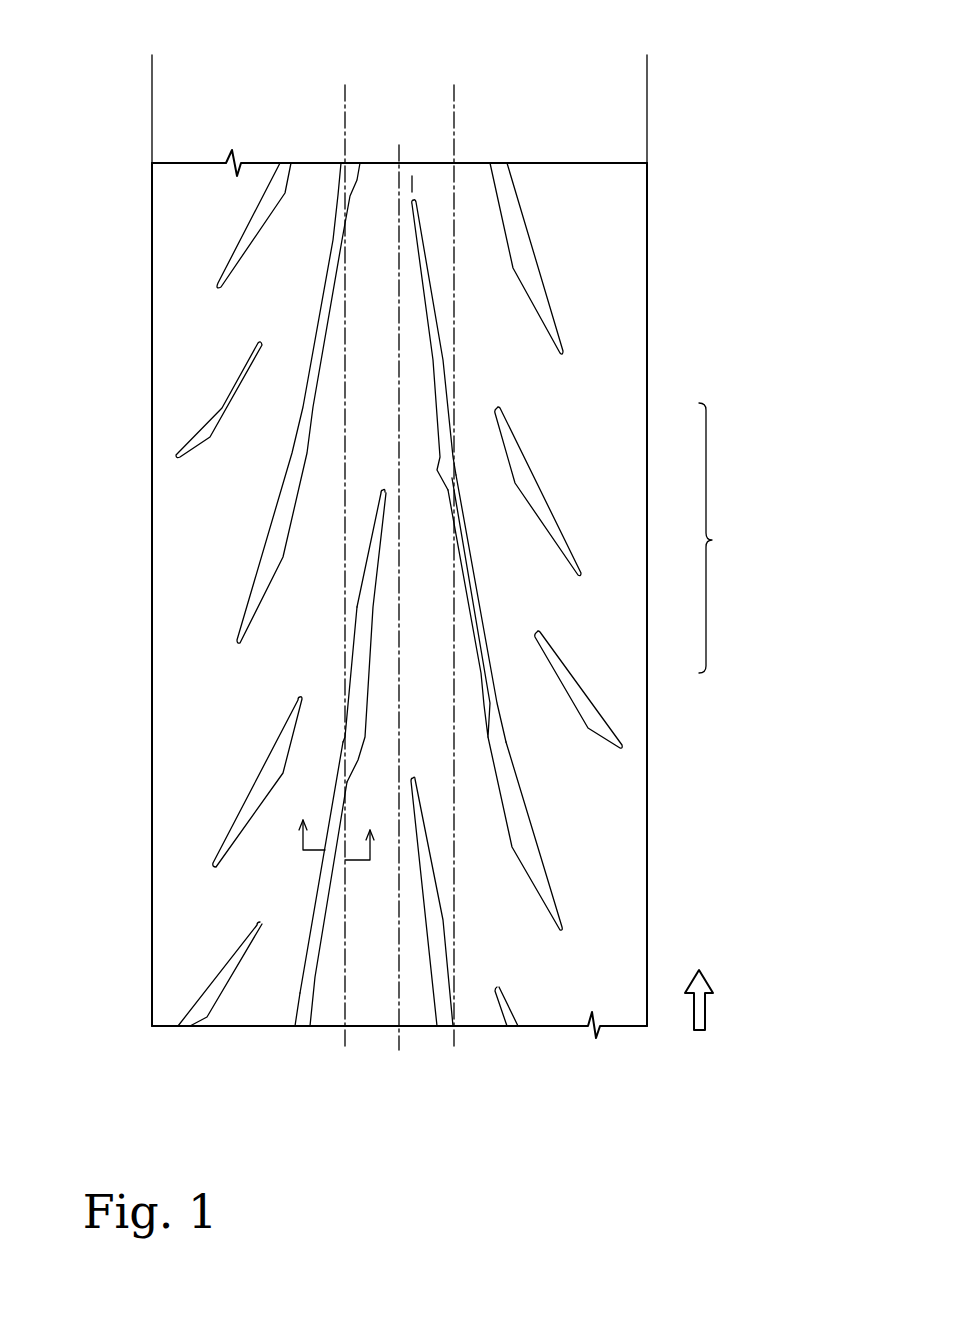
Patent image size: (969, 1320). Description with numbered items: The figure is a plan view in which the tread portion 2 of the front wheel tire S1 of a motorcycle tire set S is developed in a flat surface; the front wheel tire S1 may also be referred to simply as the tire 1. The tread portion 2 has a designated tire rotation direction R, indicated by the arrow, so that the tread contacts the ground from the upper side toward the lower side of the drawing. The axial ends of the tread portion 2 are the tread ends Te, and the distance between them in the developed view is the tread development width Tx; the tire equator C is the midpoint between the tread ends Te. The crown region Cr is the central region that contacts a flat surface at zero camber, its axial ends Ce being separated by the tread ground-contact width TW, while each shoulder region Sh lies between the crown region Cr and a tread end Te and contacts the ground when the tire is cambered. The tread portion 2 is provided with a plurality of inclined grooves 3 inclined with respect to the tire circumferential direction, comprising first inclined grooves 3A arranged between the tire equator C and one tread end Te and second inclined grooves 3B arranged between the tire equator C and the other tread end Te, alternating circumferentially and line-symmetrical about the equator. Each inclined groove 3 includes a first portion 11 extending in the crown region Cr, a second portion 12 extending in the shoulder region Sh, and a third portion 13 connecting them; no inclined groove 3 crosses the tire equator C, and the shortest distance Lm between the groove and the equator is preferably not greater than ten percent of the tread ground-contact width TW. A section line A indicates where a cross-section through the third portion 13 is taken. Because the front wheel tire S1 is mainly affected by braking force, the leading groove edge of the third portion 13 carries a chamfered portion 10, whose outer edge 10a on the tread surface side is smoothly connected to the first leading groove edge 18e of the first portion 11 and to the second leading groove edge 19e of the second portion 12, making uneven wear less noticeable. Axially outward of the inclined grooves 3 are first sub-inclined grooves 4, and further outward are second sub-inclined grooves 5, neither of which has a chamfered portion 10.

The tire 1 is at (400, 595).
The tread portion 2 is at (583, 160).
The inclined groove 3 is at (283, 527).
The first inclined groove 3A is at (463, 918).
The second inclined groove 3B is at (277, 790).
The first sub-inclined groove 4 is at (277, 760).
The second sub-inclined groove 5 is at (218, 410).
The chamfered portion 10 is at (277, 790).
The outer edge 10a is at (211, 917).
The first portion 11 is at (440, 388).
The second portion 12 is at (502, 770).
The third portion 13 is at (467, 587).
The first leading groove edge 18e is at (348, 673).
The second leading groove edge 19e is at (293, 1012).
The tread end Te is at (153, 193).
The tread development width Tx is at (153, 61).
The tread ground-contact width TW is at (345, 92).
The tire equator C is at (398, 585).
The shortest distance Lm is at (372, 184).
The tire set S is at (708, 105).
The front wheel tire S1 is at (651, 148).
The shoulder region Sh is at (243, 1000).
The end of crown region Ce is at (343, 1005).
The crown region Cr is at (410, 1010).
The line A- A is at (340, 829).
The tire rotation direction R is at (699, 989).